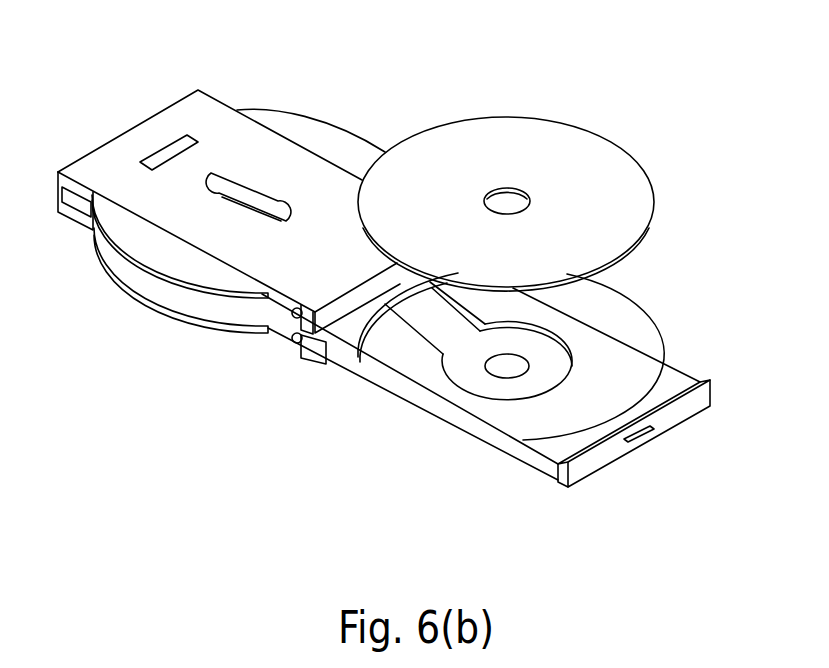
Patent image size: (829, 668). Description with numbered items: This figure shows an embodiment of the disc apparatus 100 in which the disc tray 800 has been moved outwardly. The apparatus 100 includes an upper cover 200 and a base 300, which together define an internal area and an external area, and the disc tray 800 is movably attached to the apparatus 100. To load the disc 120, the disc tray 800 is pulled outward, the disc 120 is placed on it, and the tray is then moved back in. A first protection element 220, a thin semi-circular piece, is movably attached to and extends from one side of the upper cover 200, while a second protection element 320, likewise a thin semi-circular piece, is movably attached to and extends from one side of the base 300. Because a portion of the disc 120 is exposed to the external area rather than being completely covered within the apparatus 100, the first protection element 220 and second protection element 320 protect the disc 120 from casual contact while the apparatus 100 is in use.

The apparatus 100 is at (323, 175).
The disc 120 is at (588, 155).
The upper cover 200 is at (203, 105).
The first protection element 220 is at (140, 247).
The base 300 is at (295, 337).
The second protection element 320 is at (167, 299).
The disc tray 800 is at (665, 385).